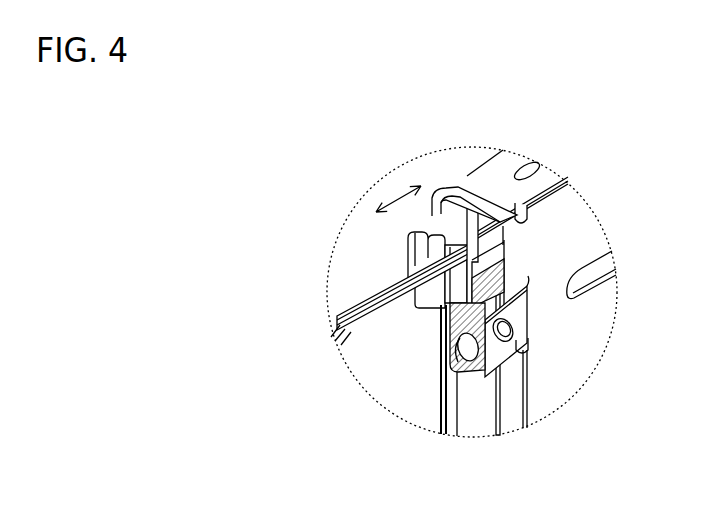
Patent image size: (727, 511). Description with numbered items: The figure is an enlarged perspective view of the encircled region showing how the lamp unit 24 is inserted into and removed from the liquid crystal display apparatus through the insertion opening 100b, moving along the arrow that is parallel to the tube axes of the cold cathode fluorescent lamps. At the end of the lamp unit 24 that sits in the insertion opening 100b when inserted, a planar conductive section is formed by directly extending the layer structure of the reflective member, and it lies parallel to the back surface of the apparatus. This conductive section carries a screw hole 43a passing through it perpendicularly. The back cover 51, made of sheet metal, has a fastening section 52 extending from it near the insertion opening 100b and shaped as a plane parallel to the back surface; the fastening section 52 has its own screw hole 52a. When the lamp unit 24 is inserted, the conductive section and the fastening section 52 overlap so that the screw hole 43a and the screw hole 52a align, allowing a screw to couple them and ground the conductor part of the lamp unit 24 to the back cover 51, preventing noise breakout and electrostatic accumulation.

The insertion opening 100b is at (465, 232).
The back cover 51 is at (583, 215).
The fastening section 52 is at (523, 300).
The screw hole 52a is at (519, 326).
The lamp unit 24 is at (438, 304).
The screw hole 43a is at (470, 368).